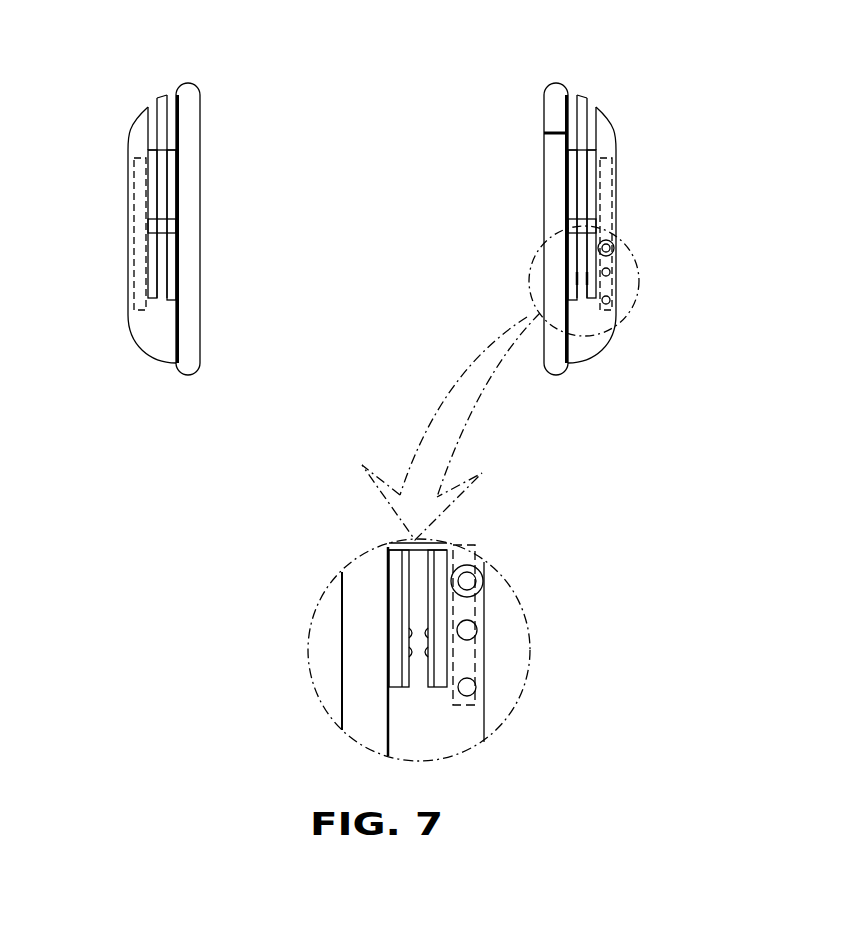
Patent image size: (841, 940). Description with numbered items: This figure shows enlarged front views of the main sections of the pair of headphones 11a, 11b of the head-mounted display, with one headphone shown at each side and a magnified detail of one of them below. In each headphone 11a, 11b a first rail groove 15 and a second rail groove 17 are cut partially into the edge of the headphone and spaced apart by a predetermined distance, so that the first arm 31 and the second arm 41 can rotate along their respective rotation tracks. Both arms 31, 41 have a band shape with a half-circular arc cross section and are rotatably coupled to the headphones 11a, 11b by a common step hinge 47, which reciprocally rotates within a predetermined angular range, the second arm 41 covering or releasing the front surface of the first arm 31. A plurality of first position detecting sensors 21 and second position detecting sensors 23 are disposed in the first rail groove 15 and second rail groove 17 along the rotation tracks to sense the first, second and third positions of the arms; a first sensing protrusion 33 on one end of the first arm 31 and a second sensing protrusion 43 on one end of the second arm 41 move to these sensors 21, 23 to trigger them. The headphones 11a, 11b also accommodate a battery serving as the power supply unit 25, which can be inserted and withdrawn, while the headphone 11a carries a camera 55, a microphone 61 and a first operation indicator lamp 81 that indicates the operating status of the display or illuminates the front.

The headphone 11a is at (541, 127).
The headphone 11b is at (203, 127).
The first rail groove 15 is at (170, 107).
The second rail groove 17 is at (152, 107).
The first position detecting sensor 21 is at (407, 632).
The second position detecting sensor 23 is at (433, 633).
The power supply unit 25 is at (134, 182).
The first arm 31 is at (171, 263).
The first sensing protrusion 33 is at (407, 652).
The second arm 41 is at (152, 263).
The second sensing protrusion 43 is at (433, 650).
The step hinge 47 is at (170, 225).
The camera 55 is at (614, 248).
The microphone 61 is at (611, 300).
The first operation indicator lamp 81 is at (611, 272).